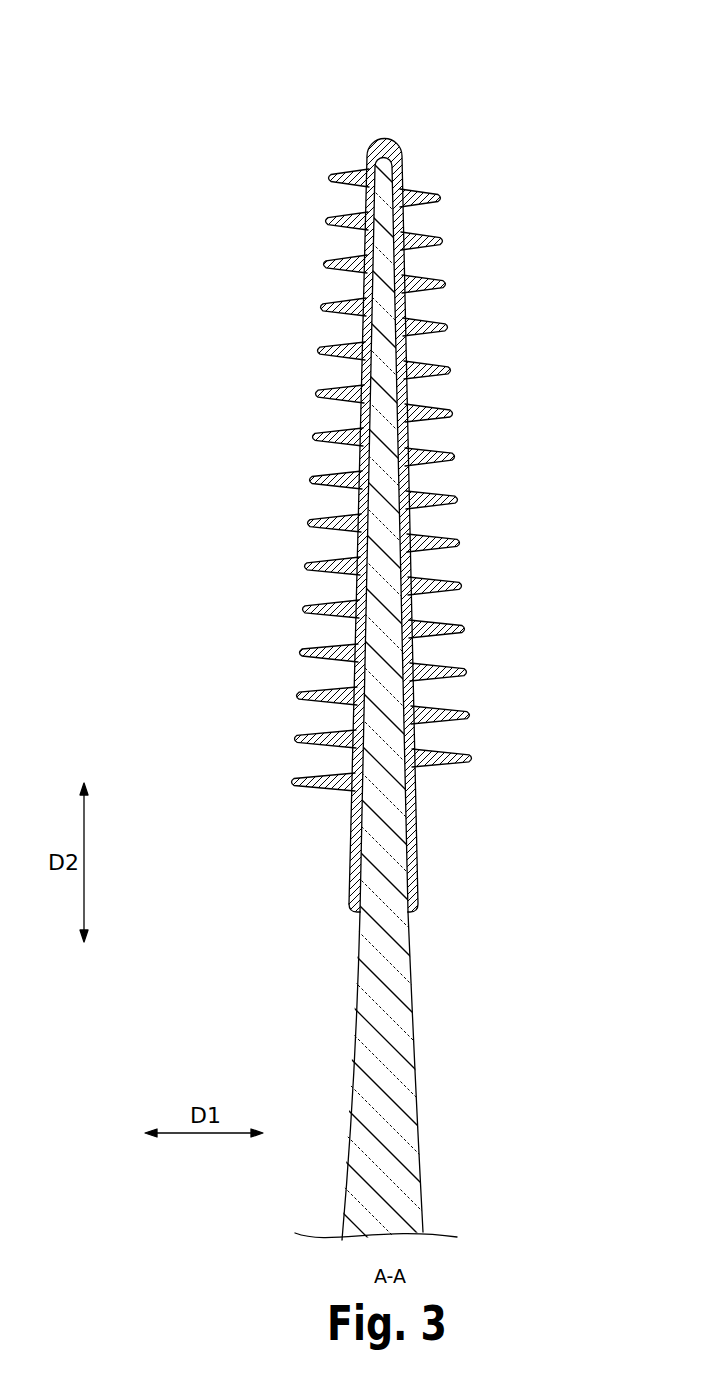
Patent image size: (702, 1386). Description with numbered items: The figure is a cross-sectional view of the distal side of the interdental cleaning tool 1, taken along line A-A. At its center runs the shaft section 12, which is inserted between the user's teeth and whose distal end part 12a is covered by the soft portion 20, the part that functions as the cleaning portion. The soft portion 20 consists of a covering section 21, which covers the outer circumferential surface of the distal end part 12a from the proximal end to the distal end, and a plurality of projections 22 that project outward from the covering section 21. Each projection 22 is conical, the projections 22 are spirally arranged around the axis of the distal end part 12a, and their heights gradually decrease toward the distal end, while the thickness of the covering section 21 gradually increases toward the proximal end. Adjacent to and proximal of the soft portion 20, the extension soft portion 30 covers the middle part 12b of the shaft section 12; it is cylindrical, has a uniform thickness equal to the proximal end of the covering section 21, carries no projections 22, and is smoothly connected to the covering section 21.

The interdental cleaning tool 1 is at (389, 682).
The shaft section 12 is at (412, 986).
The distal end part 12a is at (400, 157).
The middle part 12b is at (510, 792).
The soft portion 20 is at (338, 525).
The covering section 21 is at (361, 412).
The projections 22 is at (270, 792).
The extension soft portion 30 is at (533, 792).